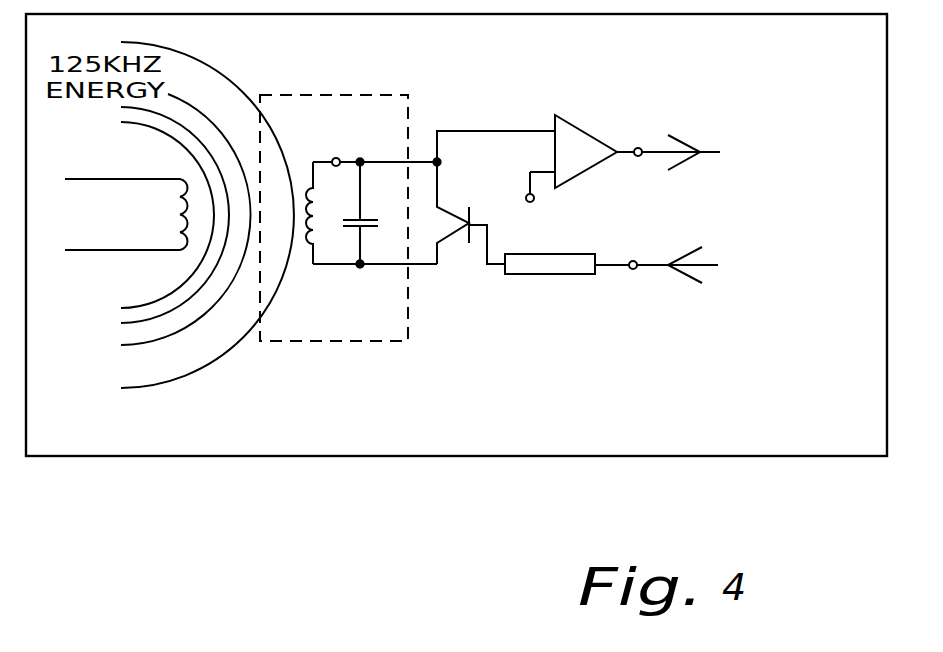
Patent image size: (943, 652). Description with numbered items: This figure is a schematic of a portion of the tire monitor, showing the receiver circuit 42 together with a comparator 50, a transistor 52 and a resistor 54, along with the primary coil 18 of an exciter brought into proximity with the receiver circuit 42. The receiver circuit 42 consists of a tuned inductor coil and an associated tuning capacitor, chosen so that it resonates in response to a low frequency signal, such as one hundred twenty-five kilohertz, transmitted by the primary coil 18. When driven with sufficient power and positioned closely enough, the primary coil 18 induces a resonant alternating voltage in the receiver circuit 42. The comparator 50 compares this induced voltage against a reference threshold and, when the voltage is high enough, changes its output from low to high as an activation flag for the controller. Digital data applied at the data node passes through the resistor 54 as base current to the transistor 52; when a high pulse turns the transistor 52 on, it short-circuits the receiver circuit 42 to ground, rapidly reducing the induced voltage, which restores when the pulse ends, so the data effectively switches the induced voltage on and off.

The primary coil 18 is at (97, 250).
The receiver circuit 42 is at (313, 96).
The comparator 50 is at (580, 128).
The transistor 52 is at (463, 243).
The resistor 54 is at (590, 252).